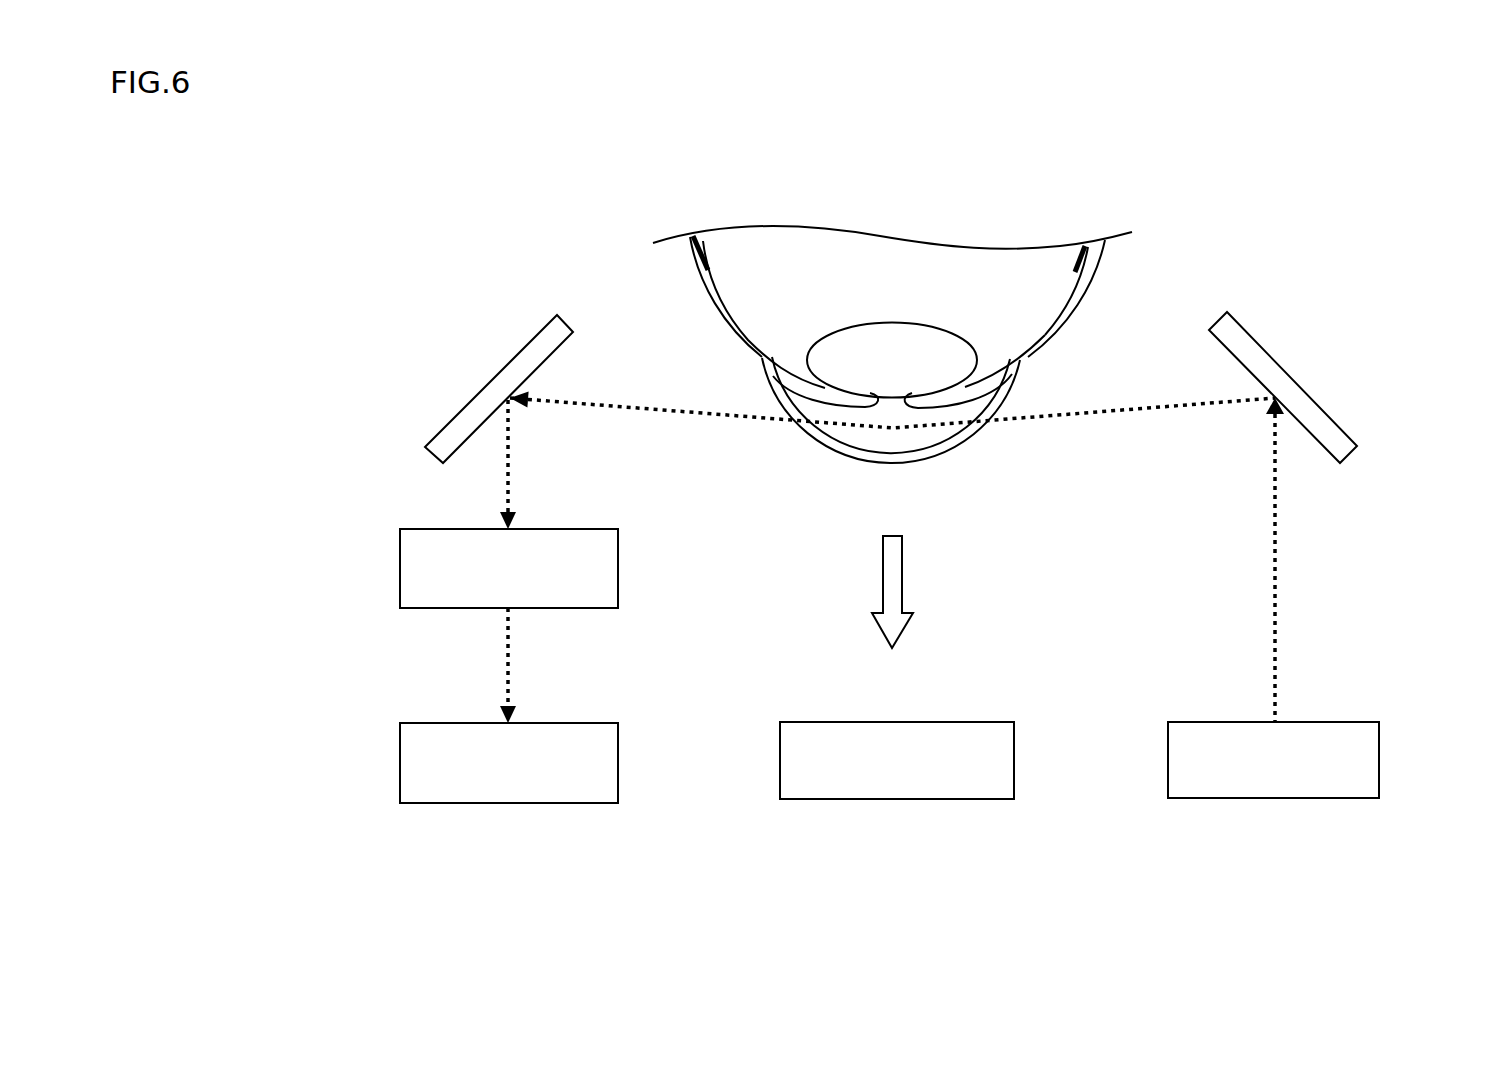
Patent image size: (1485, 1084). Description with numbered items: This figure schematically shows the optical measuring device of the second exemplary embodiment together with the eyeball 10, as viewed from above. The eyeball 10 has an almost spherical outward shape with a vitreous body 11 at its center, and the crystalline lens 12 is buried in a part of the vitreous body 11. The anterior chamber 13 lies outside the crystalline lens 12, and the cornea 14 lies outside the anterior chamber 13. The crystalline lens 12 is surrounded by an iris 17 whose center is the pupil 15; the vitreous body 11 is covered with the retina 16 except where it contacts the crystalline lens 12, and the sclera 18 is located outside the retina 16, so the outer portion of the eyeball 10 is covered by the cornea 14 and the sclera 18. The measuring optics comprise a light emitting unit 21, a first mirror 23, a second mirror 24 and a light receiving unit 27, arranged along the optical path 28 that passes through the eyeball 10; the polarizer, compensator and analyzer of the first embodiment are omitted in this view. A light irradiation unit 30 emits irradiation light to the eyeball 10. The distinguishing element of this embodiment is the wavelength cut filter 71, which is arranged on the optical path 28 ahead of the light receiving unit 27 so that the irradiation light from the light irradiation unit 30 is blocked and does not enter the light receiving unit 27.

The eyeball 10 is at (655, 277).
The vitreous body 11 is at (763, 311).
The crystalline lens 12 is at (956, 362).
The anterior chamber 13 is at (930, 418).
The cornea 14 is at (945, 455).
The pupil 15 is at (890, 405).
The retina 16 is at (1072, 260).
The iris 17 is at (988, 382).
The sclera 18 is at (1067, 312).
The light emitting unit 21 is at (1379, 762).
The first mirror 23 is at (1290, 372).
The second mirror 24 is at (492, 375).
The light receiving unit 27 is at (618, 765).
The optical path 28 is at (1163, 406).
The light irradiation unit 30 is at (1014, 762).
The wavelength cut filter 71 is at (618, 567).